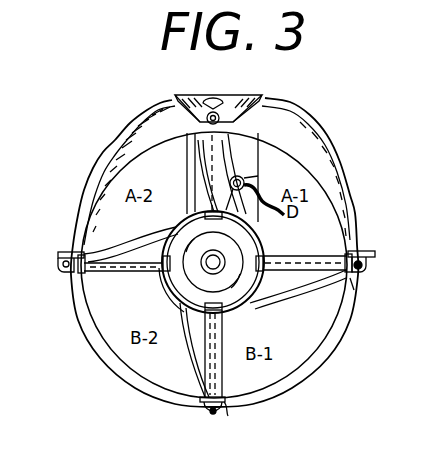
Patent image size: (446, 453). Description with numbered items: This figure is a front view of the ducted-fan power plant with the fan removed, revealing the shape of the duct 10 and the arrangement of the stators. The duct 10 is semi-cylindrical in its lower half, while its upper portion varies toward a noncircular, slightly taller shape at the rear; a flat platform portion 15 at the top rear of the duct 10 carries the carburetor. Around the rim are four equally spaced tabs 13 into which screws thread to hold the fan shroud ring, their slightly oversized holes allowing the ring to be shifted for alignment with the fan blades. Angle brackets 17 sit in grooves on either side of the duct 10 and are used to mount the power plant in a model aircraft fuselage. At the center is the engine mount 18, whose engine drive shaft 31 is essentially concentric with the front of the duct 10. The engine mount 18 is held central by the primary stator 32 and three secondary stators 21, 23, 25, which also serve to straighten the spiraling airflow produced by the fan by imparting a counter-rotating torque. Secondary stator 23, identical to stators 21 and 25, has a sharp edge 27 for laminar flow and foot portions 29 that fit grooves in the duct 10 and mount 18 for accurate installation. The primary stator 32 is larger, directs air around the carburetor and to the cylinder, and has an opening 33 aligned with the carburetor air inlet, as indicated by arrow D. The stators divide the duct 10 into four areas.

The duct 10 is at (316, 137).
The tabs 13 is at (58, 270).
The flat platform portion 15 is at (178, 96).
The angle brackets 17 is at (63, 252).
The engine mount 18 is at (165, 296).
The secondary stator 21 is at (141, 239).
The secondary stator 23 is at (320, 277).
The secondary stator 25 is at (200, 376).
The sharp edge 27 is at (229, 408).
The foot portions 29 is at (353, 283).
The drive shaft 31 is at (238, 251).
The primary stator 32 is at (186, 146).
The opening 33 is at (250, 175).